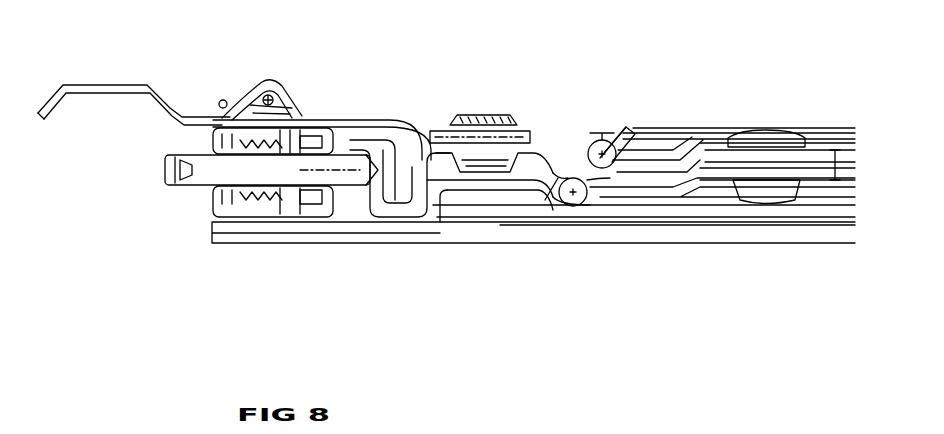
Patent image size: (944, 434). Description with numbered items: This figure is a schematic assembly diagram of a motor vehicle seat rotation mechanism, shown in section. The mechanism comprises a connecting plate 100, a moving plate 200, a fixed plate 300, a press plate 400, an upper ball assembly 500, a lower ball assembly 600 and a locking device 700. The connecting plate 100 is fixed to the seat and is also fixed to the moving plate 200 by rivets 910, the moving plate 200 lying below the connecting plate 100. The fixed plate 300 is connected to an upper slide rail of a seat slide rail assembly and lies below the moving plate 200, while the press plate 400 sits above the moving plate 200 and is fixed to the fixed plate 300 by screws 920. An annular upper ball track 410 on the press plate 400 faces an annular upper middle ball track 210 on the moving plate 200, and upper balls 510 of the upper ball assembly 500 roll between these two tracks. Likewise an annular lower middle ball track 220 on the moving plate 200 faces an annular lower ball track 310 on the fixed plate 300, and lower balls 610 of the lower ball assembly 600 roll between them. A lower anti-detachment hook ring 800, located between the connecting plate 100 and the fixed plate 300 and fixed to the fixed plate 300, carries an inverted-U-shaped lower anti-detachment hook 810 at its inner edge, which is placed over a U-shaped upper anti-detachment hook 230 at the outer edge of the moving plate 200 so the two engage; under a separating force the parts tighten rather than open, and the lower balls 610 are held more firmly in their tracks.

The connecting plate 100 is at (390, 110).
The moving plate 200 is at (430, 110).
The upper middle ball track 210 is at (632, 125).
The lower middle ball track 220 is at (568, 177).
The upper anti-detachment hook 230 is at (400, 217).
The fixed plate 300 is at (503, 187).
The lower ball track 310 is at (575, 207).
The press plate 400 is at (670, 148).
The upper ball track 410 is at (604, 130).
The upper ball assembly 500 is at (672, 117).
The upper balls 510 is at (606, 150).
The lower ball assembly 600 is at (722, 231).
The lower balls 610 is at (590, 194).
The locking device 700 is at (158, 178).
The lower anti-detachment hook ring 800 is at (352, 213).
The lower anti-detachment hook 810 is at (340, 110).
The rivets 910 is at (515, 128).
The screws 920 is at (783, 147).